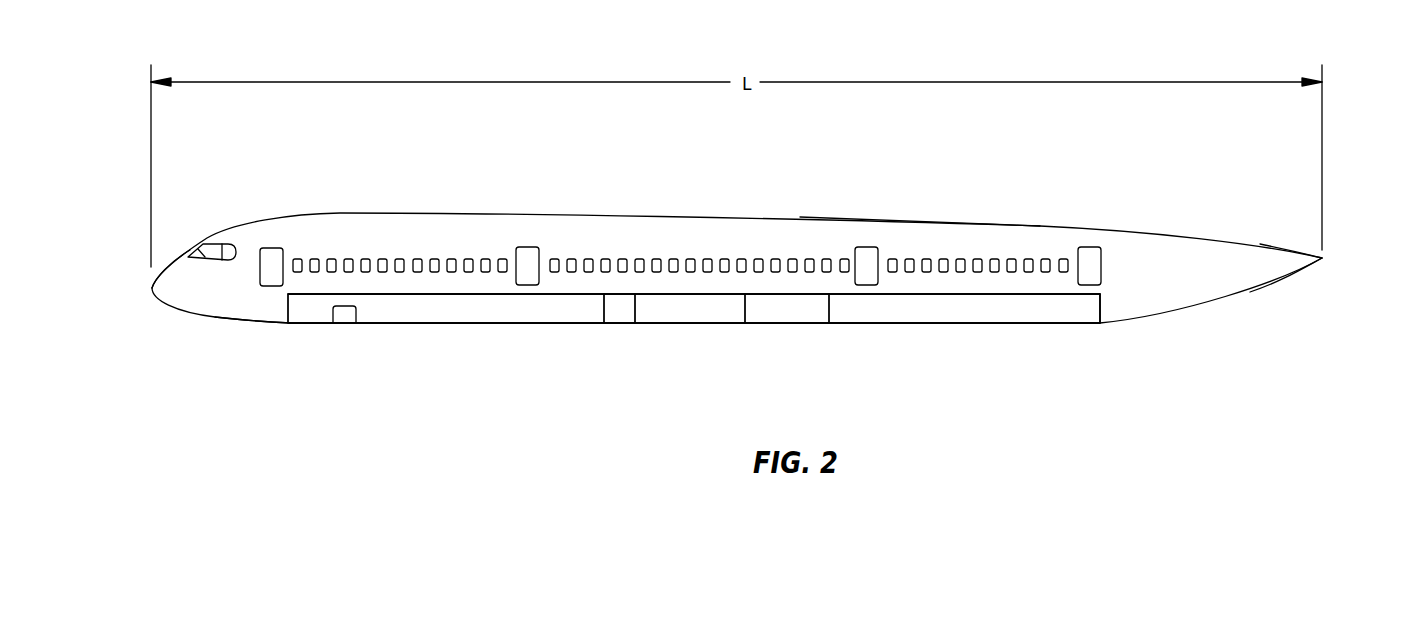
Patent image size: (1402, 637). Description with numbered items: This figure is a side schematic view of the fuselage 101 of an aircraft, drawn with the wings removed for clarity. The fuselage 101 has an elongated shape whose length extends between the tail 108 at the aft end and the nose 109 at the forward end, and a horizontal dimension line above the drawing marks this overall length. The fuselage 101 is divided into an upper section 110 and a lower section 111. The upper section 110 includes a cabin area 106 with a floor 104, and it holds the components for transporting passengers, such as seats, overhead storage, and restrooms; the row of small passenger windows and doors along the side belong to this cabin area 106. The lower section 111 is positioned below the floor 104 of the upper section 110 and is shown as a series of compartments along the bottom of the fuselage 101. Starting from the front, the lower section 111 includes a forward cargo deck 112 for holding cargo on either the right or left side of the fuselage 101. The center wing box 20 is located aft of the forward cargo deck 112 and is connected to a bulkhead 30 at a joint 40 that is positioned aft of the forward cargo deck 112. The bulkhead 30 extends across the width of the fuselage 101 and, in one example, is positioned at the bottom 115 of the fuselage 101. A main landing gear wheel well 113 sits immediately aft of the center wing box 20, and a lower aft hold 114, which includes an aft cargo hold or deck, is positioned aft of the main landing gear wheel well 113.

The fuselage 101 is at (337, 213).
The cabin area 106 is at (403, 235).
The floor 104 is at (573, 294).
The joint 40 is at (635, 317).
The upper section 110 is at (898, 235).
The nose 109 is at (152, 290).
The tail 108 is at (1323, 259).
The lower section 111 is at (270, 312).
The forward cargo deck 112 is at (407, 322).
The bulkhead 30 is at (618, 312).
The center wing box 20 is at (681, 324).
The main landing gear wheel well 113 is at (778, 323).
The lower aft hold 114 is at (920, 323).
The bottom 115 is at (1082, 323).